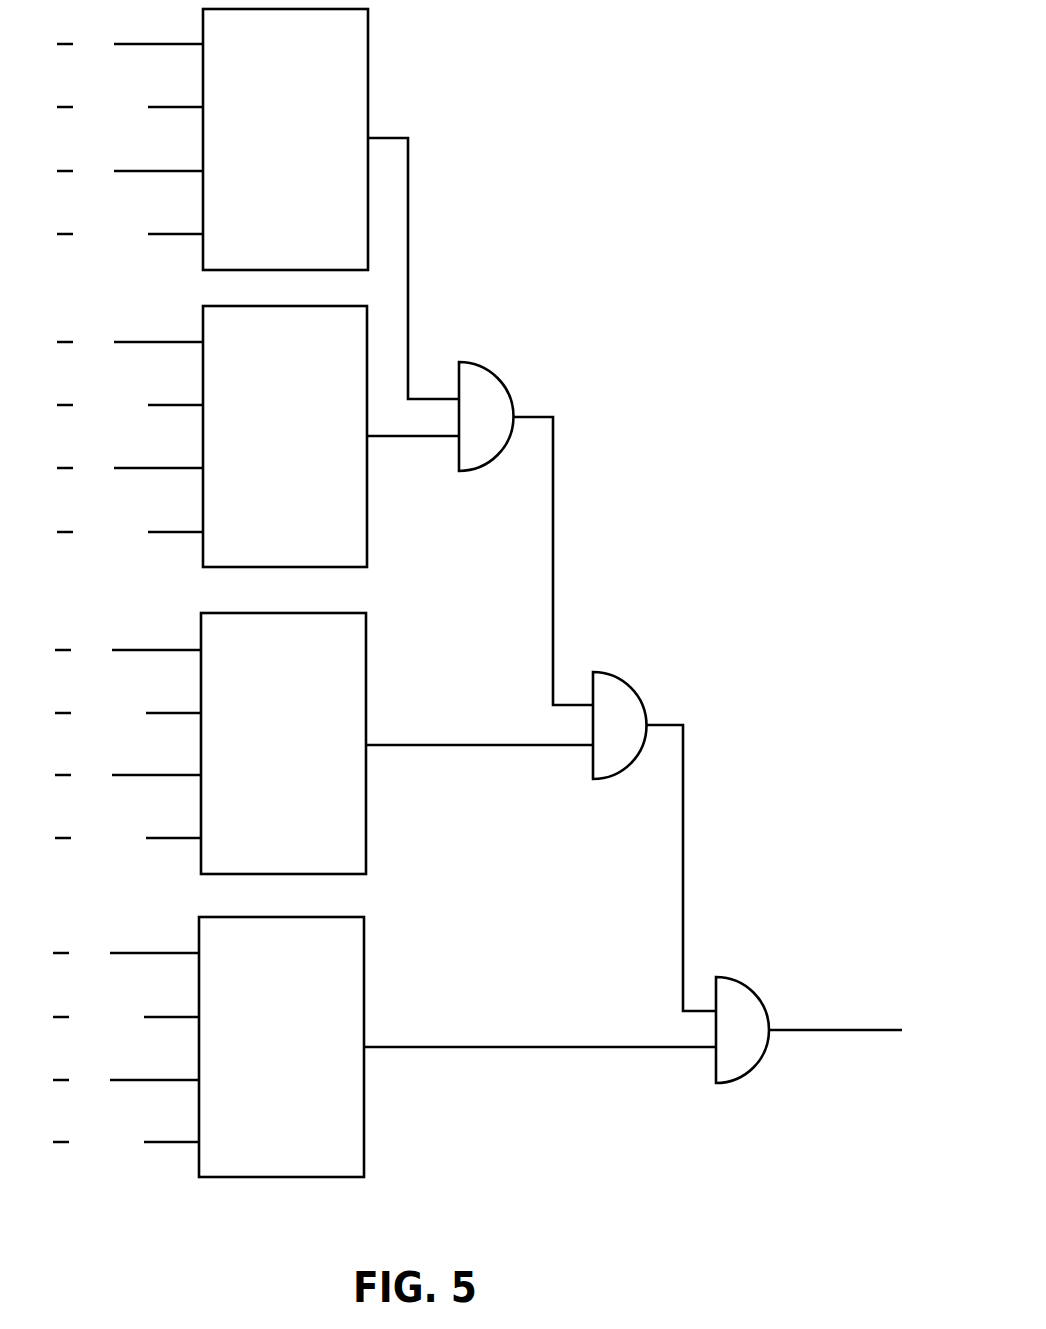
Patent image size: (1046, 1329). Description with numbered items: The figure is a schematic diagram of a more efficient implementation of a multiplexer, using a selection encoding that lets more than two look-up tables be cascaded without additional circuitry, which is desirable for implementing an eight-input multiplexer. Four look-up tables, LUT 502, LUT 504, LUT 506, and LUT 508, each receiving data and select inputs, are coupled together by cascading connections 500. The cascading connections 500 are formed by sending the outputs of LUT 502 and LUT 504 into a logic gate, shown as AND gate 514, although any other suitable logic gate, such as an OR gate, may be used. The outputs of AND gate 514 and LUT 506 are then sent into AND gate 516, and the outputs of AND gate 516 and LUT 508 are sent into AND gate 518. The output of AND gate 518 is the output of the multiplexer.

The cascading connections 500 is at (477, 593).
The LUT 502 is at (368, 75).
The LUT 504 is at (367, 534).
The LUT 506 is at (366, 669).
The LUT 508 is at (364, 981).
The AND gate 514 is at (500, 372).
The AND gate 516 is at (632, 682).
The AND gate 518 is at (735, 1011).